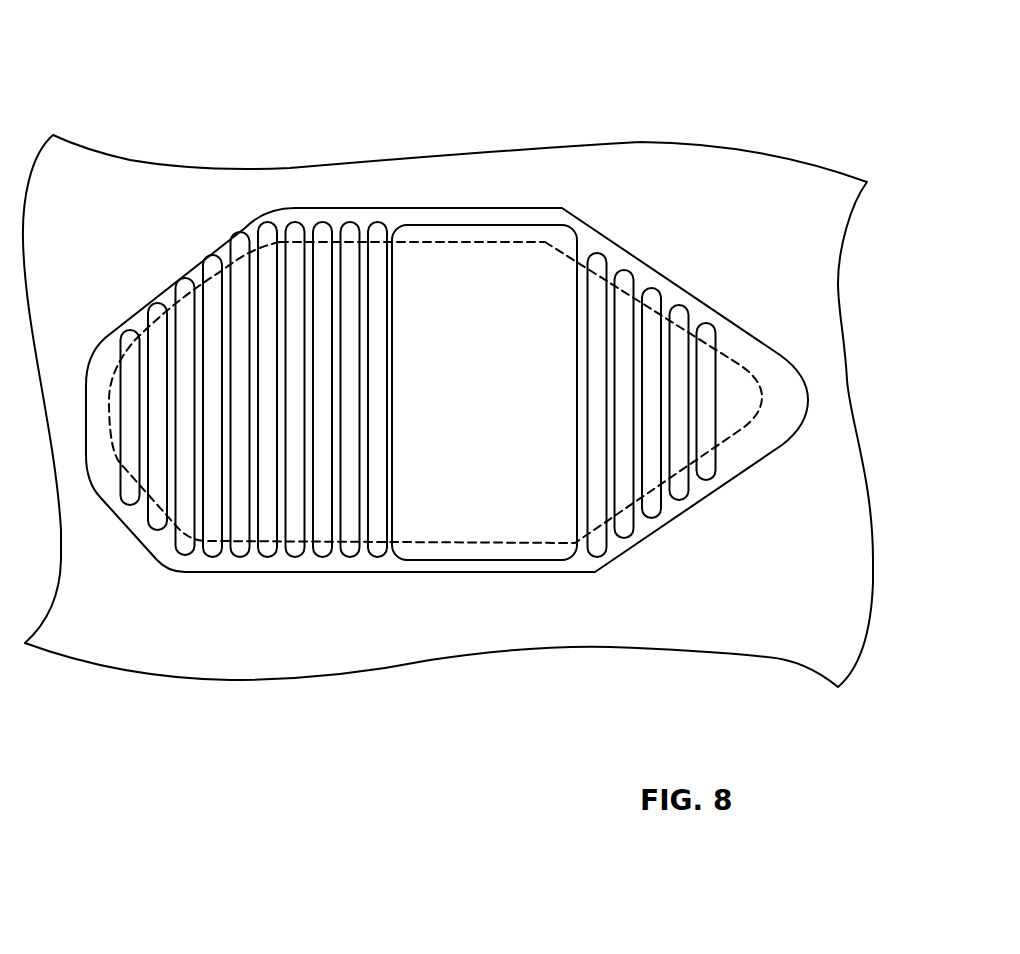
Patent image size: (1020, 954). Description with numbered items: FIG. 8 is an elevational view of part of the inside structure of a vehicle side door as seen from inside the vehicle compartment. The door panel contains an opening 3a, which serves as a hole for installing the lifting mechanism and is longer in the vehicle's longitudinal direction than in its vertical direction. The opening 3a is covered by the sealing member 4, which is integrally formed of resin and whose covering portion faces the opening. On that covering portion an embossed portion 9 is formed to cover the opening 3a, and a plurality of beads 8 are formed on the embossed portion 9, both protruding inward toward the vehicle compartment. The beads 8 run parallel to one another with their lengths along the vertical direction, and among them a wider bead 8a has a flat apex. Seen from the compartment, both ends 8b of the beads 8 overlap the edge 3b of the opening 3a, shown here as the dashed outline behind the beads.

The sealing member 4 is at (660, 272).
The beads 8 is at (342, 272).
The wider bead 8a is at (512, 232).
The ends of the beads 8b is at (377, 222).
The opening 3a is at (733, 363).
The edge of the opening 3b is at (443, 240).
The embossed portion 9 is at (572, 575).